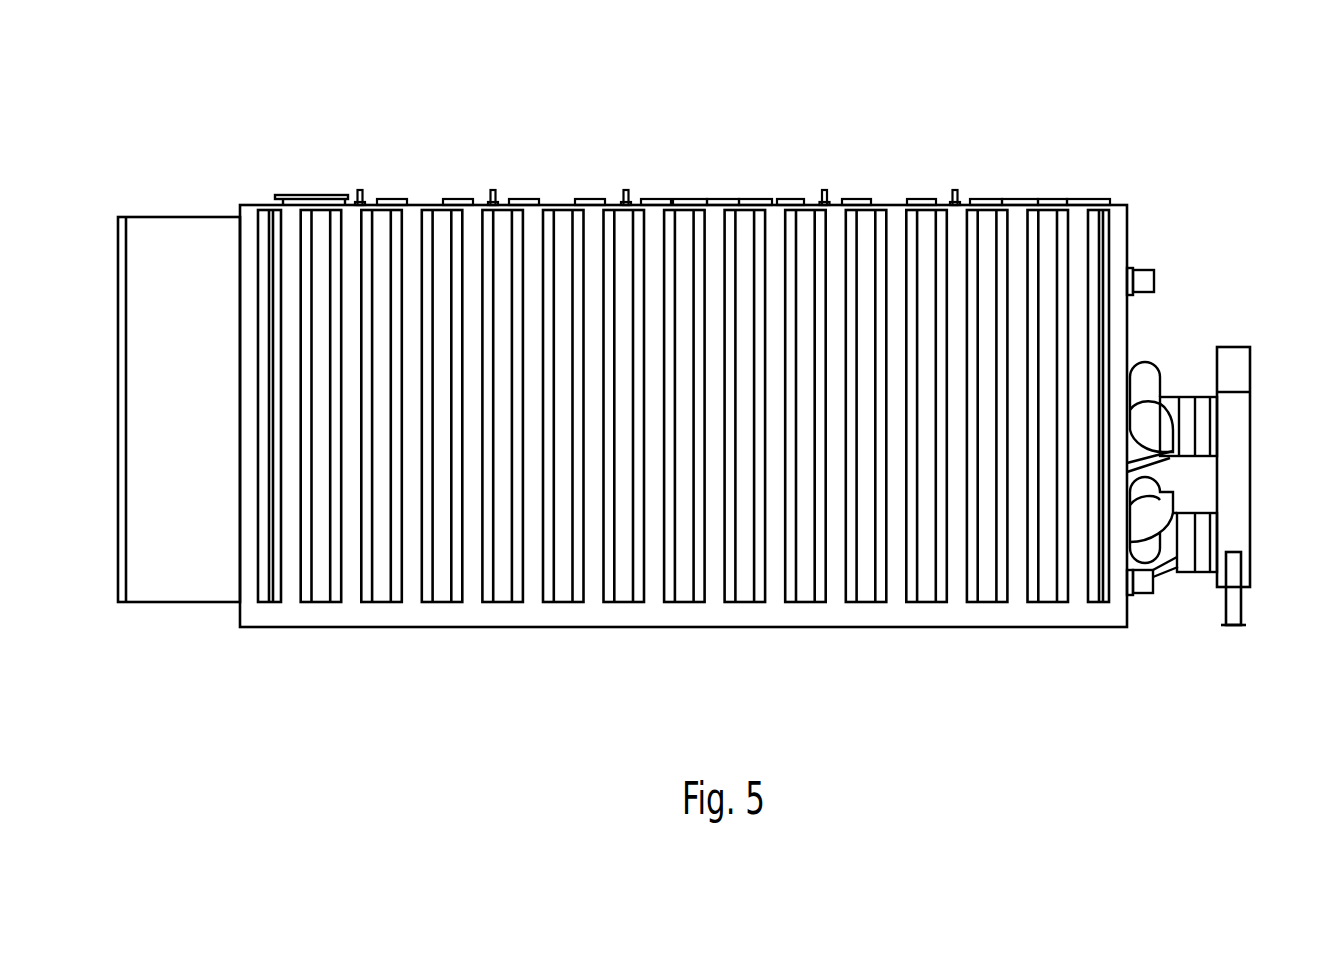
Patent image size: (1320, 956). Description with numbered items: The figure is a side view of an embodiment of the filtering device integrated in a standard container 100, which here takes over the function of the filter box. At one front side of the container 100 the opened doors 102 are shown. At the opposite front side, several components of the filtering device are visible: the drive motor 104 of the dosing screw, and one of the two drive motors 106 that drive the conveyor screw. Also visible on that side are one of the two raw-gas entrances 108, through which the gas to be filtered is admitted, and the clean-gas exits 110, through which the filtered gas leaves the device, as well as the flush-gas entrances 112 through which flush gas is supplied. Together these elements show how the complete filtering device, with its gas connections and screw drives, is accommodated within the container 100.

The container 100 is at (668, 108).
The doors 102 is at (178, 237).
The drive motor 104 is at (1145, 277).
The drive motor 106 is at (1143, 582).
The raw-gas entrance 108 is at (310, 195).
The clean-gas exit 110 is at (1170, 405).
The flush-gas entrance 112 is at (1163, 441).